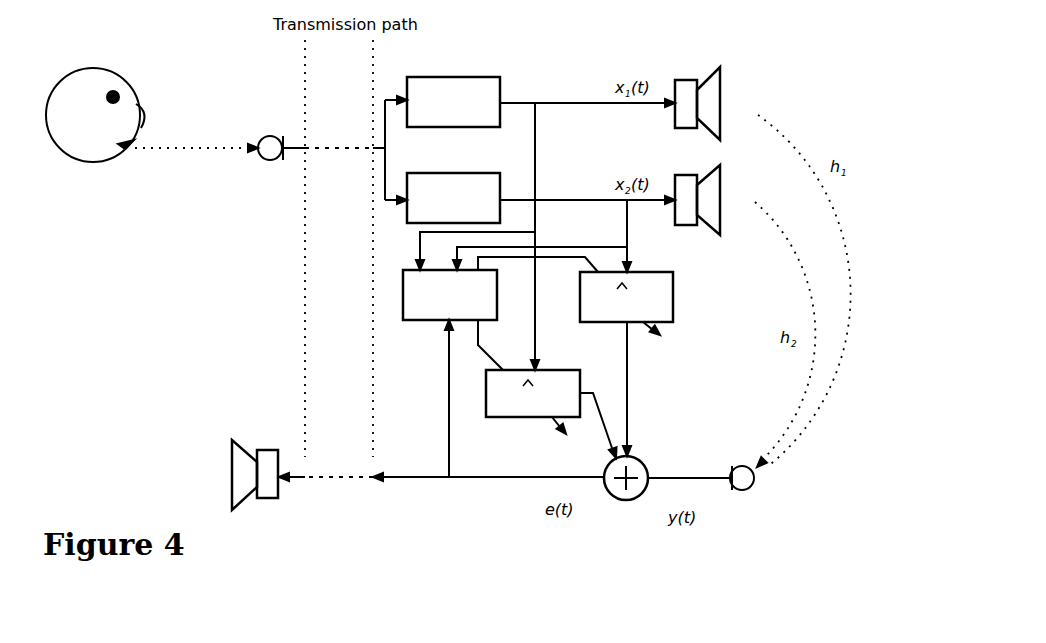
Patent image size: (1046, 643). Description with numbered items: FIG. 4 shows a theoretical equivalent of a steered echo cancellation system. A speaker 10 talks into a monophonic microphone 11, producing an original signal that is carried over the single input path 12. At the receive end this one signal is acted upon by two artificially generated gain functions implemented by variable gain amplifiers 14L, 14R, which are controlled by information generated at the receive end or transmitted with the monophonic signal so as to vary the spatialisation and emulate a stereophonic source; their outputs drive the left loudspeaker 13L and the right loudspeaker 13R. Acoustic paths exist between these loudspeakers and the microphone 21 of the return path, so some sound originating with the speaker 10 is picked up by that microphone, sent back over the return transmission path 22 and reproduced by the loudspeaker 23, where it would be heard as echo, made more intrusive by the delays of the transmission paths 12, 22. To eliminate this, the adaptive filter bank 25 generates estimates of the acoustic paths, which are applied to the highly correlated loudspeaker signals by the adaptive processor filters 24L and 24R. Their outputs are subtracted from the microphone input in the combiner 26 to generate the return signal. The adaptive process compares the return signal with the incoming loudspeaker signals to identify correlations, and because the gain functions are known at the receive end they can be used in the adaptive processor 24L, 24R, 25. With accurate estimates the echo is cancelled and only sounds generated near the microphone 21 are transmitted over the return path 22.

The speaker 10 is at (152, 115).
The microphone 11 is at (278, 131).
The input path 12 is at (356, 150).
The left loudspeaker 13L is at (697, 99).
The right loudspeaker 13R is at (697, 194).
The variable gain amplifier 14L is at (453, 90).
The variable gain amplifier 14R is at (453, 187).
The microphone 21 is at (701, 496).
The return transmission path 22 is at (441, 466).
The loudspeaker 23 is at (255, 463).
The adaptive processor filter 24L is at (533, 411).
The adaptive processor filter 24R is at (644, 305).
The adaptive filter bank 25 is at (450, 311).
The combiner 26 is at (631, 488).